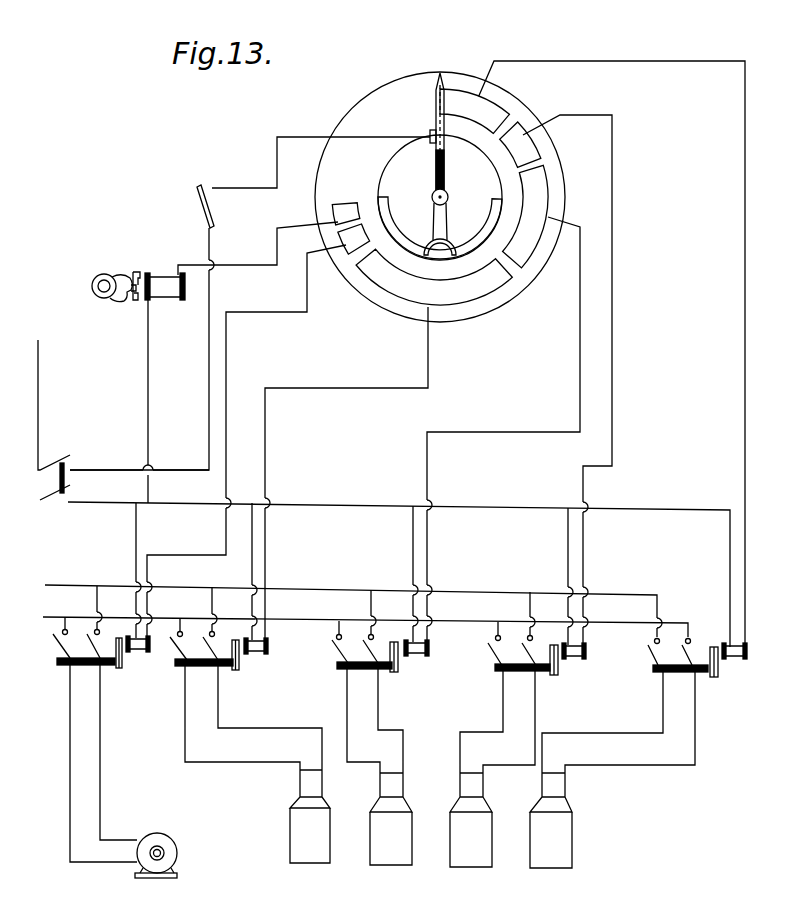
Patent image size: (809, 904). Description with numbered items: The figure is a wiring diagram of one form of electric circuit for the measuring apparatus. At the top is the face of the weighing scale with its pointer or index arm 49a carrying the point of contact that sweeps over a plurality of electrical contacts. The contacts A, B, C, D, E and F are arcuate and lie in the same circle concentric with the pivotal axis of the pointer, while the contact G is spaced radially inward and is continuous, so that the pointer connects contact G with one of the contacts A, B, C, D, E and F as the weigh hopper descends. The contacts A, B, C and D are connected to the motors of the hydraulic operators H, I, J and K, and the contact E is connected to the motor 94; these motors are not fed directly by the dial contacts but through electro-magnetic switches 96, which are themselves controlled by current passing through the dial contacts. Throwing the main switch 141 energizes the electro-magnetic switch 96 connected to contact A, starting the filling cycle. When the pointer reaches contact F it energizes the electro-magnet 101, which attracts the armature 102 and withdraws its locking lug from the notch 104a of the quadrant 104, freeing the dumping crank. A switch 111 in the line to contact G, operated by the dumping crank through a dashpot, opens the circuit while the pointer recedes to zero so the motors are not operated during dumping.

The pointer needle 49a is at (435, 118).
The switch 111 is at (200, 187).
The quadrant 104 is at (128, 276).
The notch 104a is at (112, 304).
The armature 102 is at (136, 303).
The electro-magnet 101 is at (163, 292).
The main switch 141 is at (62, 463).
The electro-magnetic switch 96 is at (680, 678).
The motor 94 is at (170, 857).
The contact A is at (500, 113).
The contact B is at (523, 147).
The contact C is at (528, 253).
The contact D is at (422, 298).
The contact E is at (350, 244).
The contact F is at (334, 207).
The contact G is at (379, 192).
The hydraulic operator H is at (551, 820).
The hydraulic operator I is at (471, 820).
The hydraulic operator J is at (391, 819).
The hydraulic operator K is at (310, 817).